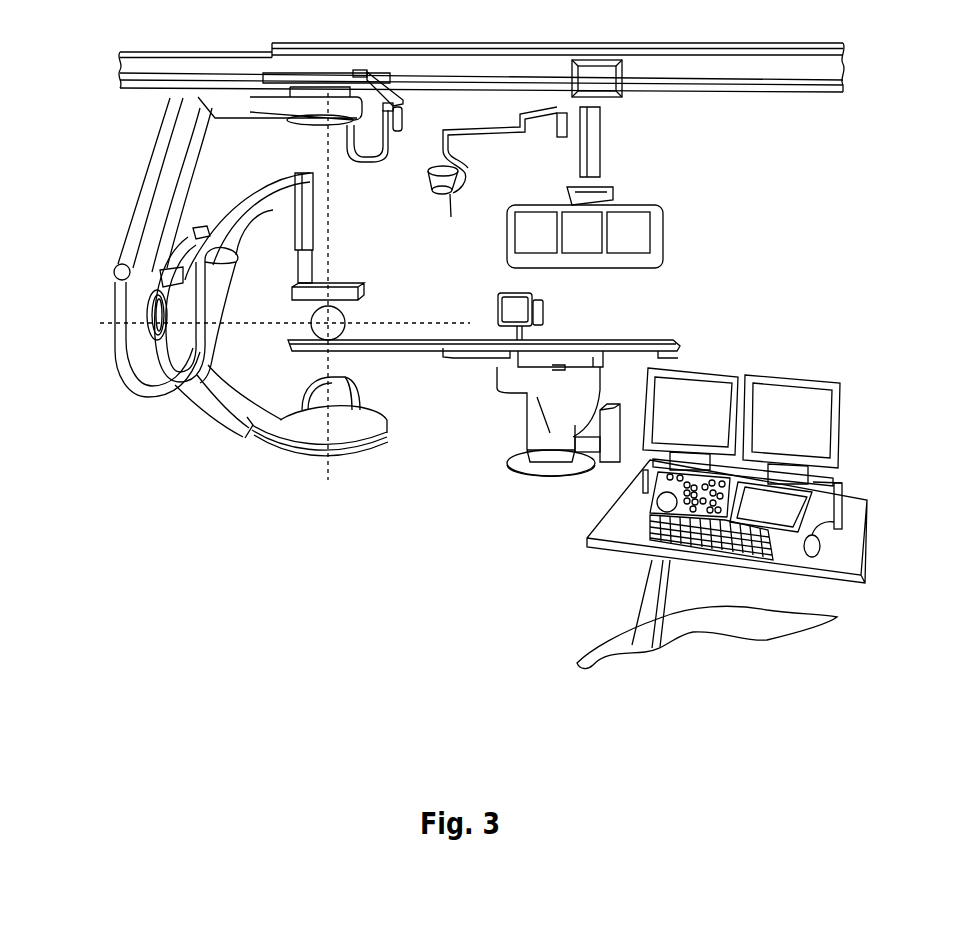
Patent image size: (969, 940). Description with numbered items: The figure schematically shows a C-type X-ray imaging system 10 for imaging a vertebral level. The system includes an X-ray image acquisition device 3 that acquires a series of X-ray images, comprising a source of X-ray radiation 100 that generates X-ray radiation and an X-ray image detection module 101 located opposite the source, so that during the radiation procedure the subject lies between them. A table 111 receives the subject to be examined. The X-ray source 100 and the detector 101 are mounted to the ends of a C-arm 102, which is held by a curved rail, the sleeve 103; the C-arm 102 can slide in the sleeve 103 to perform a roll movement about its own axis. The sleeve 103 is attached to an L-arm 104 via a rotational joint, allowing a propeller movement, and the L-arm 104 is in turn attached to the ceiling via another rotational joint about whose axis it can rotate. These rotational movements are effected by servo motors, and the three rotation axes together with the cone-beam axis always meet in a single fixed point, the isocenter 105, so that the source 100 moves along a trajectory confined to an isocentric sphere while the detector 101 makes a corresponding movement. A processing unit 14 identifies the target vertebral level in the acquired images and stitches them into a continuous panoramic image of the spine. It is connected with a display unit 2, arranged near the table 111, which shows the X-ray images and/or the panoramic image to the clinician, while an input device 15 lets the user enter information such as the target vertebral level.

The X-ray imaging system 10 is at (712, 187).
The X-ray image acquisition device 3 is at (333, 243).
The X-ray image detection module 101 is at (370, 291).
The isocenter 105 is at (327, 325).
The table 111 is at (408, 363).
The display unit 2 is at (697, 392).
The processing unit 14 is at (848, 486).
The input device 15 is at (655, 516).
The L-arm 104 is at (147, 170).
The sleeve 103 is at (203, 358).
The C-arm 102 is at (237, 450).
The source of X-ray radiation 100 is at (395, 465).